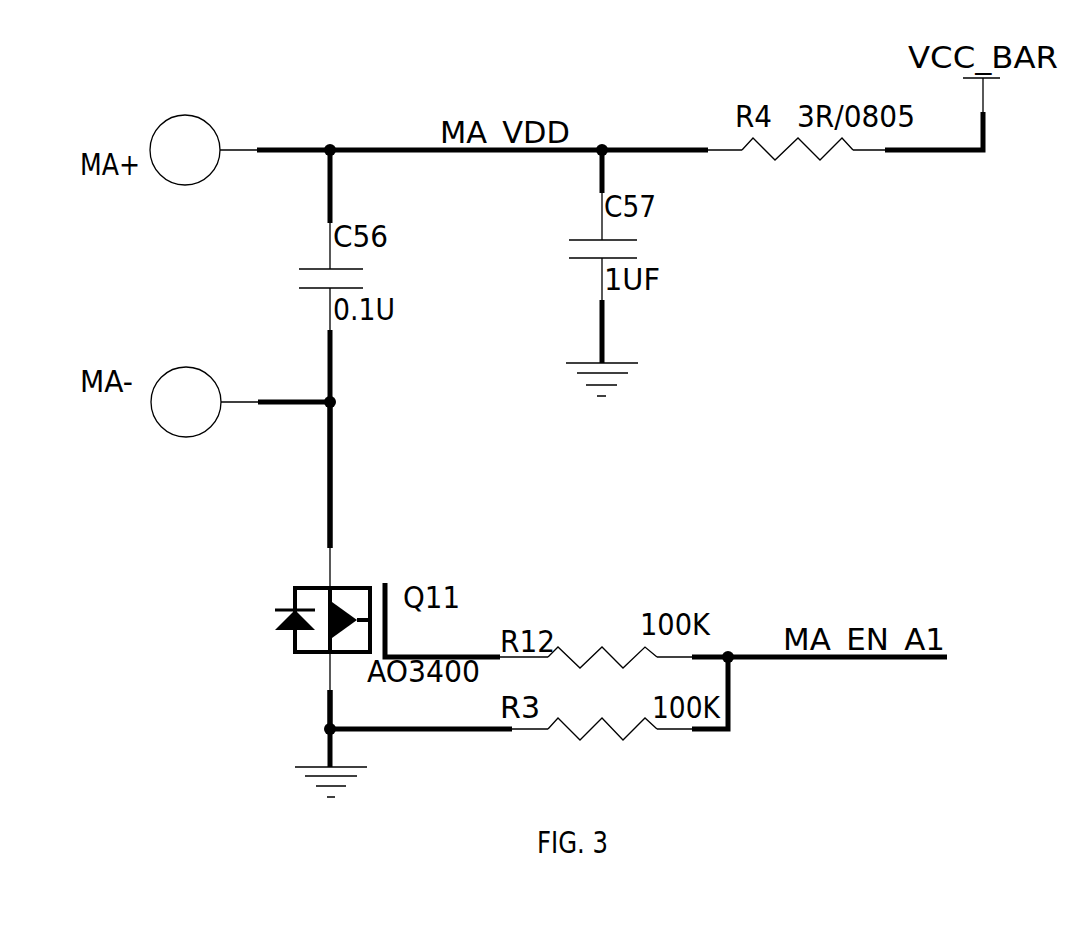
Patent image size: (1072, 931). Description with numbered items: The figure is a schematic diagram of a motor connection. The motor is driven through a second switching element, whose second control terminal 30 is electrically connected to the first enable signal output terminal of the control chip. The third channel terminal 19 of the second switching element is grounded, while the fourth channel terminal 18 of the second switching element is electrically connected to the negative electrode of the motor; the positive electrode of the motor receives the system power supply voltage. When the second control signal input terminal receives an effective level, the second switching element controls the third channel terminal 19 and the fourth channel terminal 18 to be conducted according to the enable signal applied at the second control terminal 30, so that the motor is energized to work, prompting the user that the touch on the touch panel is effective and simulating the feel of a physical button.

The fourth channel terminal 18 is at (344, 495).
The third channel terminal 19 is at (344, 690).
The second control terminal 30 is at (466, 623).